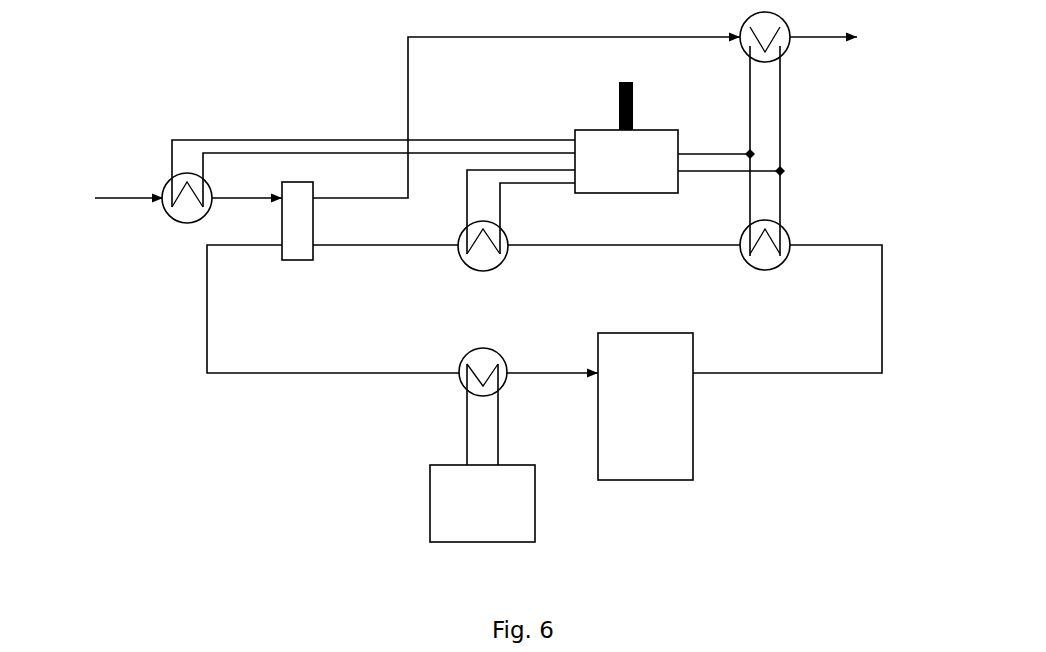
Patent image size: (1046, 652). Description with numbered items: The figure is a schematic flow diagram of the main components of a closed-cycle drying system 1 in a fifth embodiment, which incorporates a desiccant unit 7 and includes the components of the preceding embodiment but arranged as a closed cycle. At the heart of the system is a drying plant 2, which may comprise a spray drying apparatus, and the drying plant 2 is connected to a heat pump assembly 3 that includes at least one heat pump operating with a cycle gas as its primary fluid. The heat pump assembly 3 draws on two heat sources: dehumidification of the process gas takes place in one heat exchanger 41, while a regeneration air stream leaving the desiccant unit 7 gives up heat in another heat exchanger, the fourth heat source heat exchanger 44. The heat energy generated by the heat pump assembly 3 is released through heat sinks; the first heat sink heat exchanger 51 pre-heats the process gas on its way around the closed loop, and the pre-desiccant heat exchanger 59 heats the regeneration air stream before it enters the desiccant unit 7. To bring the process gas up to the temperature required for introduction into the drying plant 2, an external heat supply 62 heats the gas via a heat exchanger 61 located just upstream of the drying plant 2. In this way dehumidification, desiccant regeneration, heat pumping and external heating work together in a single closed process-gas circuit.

The drying system 1 is at (174, 67).
The drying plant 2 is at (706, 481).
The heat pump assembly 3 is at (666, 117).
The desiccant unit 7 is at (277, 253).
The first heat source heat exchanger 41 is at (783, 263).
The fourth heat source heat exchanger 44 is at (787, 50).
The first heat sink heat exchanger 51 is at (464, 262).
The pre-desiccant heat exchanger 59 is at (165, 178).
The heat exchanger 61 is at (460, 385).
The external heat supply 62 is at (425, 508).